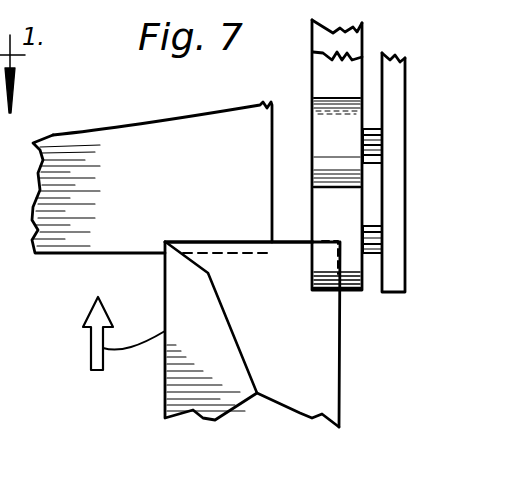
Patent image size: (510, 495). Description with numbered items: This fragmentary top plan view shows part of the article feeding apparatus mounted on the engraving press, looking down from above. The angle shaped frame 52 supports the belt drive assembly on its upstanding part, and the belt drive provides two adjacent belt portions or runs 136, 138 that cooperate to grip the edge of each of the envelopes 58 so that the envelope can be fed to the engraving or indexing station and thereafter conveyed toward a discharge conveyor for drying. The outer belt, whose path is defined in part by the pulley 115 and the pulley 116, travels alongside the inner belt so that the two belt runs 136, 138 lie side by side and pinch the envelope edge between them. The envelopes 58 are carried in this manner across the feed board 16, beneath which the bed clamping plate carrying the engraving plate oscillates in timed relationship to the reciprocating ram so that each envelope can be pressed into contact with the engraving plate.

The feed board 16 is at (78, 157).
The envelopes 58 is at (307, 374).
The belt run 138 is at (352, 42).
The belt run 136 is at (350, 90).
The pulley 115 is at (356, 124).
The angle shaped frame 52 is at (397, 193).
The pulley 116 is at (352, 292).